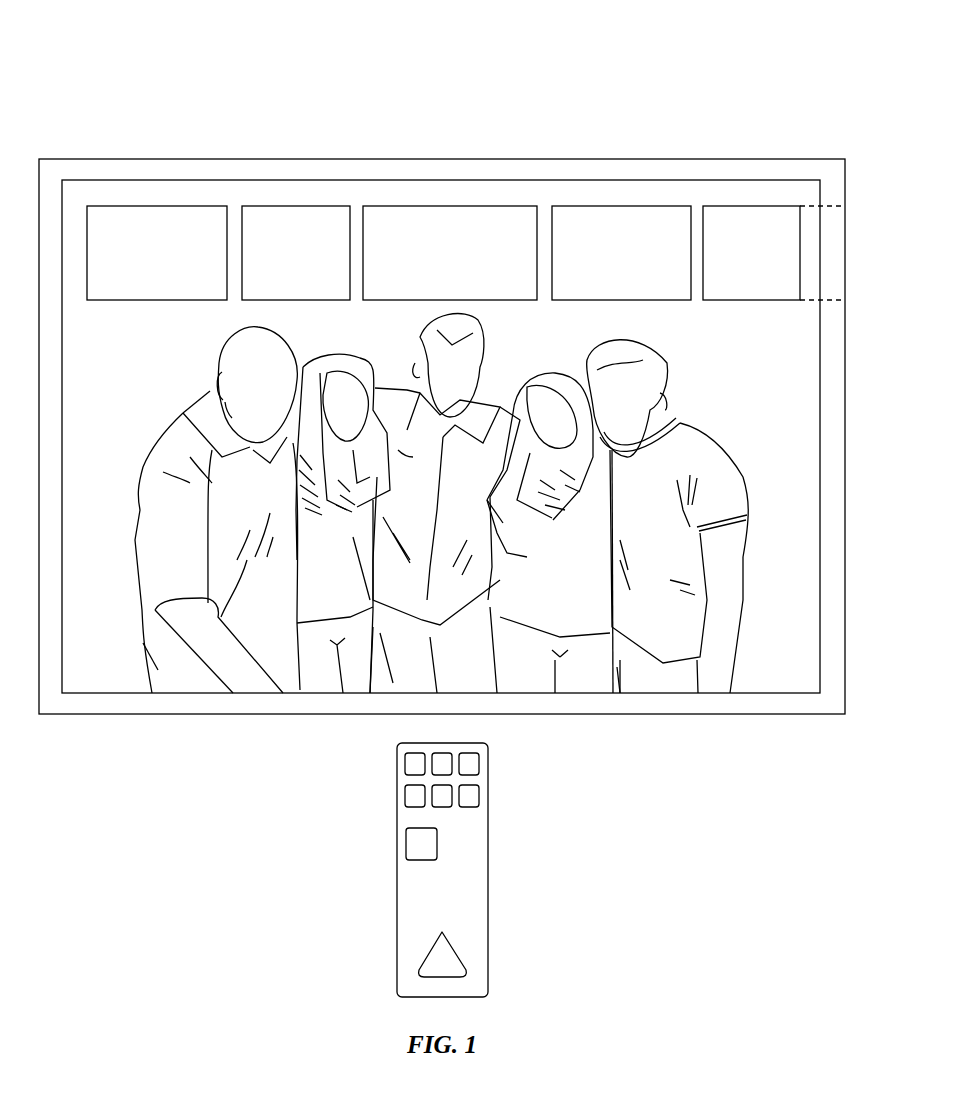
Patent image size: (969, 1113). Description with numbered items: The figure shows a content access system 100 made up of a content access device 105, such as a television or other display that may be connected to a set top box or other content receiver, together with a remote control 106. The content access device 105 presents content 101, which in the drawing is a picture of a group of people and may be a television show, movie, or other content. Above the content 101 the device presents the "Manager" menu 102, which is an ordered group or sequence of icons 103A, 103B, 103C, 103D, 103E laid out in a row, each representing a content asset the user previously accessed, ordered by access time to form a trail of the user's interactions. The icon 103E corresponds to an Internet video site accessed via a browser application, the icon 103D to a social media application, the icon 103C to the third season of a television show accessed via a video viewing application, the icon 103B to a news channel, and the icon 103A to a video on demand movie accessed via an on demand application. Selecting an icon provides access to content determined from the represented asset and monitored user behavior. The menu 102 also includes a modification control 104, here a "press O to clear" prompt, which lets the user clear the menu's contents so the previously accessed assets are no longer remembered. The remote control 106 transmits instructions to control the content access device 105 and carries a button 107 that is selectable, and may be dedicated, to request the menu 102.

The content access system 100 is at (72, 74).
The content 101 is at (82, 180).
The menu 102 is at (848, 206).
The icon 103A is at (750, 206).
The icon 103B is at (612, 206).
The icon 103C is at (450, 206).
The icon 103D is at (307, 206).
The icon 103E is at (147, 206).
The modification control 104 is at (507, 182).
The content access device 105 is at (43, 159).
The remote control 106 is at (489, 806).
The button 107 is at (480, 761).